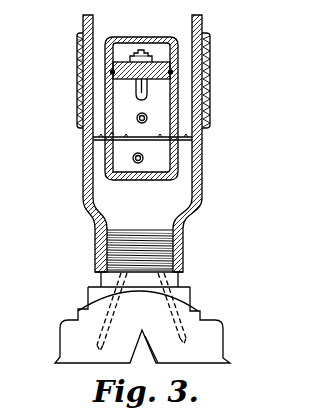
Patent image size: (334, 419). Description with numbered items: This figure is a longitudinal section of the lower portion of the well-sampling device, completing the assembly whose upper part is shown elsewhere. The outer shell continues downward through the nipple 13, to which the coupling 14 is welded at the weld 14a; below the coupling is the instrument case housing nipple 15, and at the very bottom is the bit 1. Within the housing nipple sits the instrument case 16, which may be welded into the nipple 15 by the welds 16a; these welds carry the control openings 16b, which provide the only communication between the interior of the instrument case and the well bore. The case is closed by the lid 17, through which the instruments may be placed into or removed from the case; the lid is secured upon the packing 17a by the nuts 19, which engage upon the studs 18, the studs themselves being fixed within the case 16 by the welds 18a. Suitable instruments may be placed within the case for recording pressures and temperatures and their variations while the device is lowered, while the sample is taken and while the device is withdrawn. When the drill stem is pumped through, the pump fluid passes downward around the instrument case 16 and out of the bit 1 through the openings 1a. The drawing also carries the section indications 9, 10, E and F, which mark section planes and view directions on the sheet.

The bit 1 is at (77, 343).
The bit openings 1a is at (184, 341).
The section line 9- 9 is at (239, 31).
The section line 10- 10 is at (166, 111).
The nipple 13 is at (43, 23).
The coupling 14 is at (180, 84).
The weld 14a is at (78, 42).
The instrument case housing nipple 15 is at (202, 201).
The instrument case 16 is at (178, 152).
The welds 16a is at (203, 128).
The control openings 16b is at (140, 118).
The lid 17 is at (112, 64).
The packing 17a is at (111, 72).
The studs 18 is at (148, 91).
The welds 18a is at (118, 111).
The nuts 19 is at (153, 58).
The view E is at (0, 257).
The section line F- F is at (222, 15).